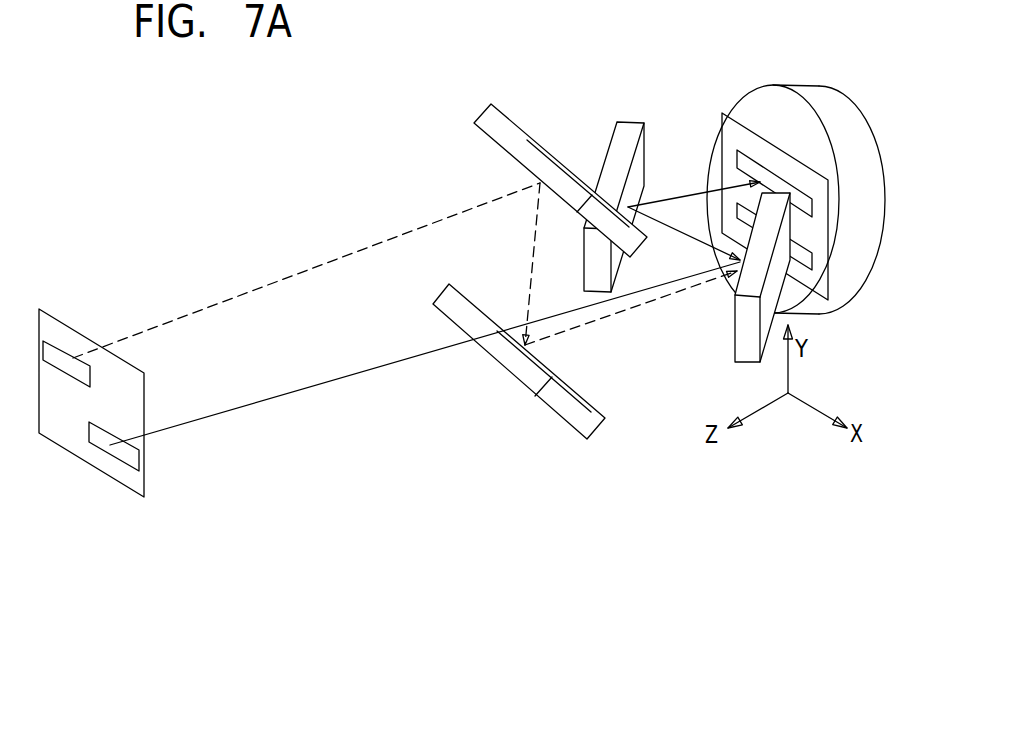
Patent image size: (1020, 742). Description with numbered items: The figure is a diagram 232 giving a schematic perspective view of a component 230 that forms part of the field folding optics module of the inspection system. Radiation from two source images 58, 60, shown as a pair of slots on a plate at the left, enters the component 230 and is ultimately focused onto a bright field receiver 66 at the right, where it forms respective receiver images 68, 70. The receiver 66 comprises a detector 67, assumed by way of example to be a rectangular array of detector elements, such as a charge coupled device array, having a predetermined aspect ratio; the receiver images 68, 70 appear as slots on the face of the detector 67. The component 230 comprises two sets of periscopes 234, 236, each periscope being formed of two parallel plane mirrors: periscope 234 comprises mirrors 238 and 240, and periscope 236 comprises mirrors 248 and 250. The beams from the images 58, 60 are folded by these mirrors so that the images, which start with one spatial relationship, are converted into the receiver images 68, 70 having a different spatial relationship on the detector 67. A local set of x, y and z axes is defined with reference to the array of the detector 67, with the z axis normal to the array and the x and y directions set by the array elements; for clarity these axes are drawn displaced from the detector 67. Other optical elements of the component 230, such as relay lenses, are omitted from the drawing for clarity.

The image 58 is at (107, 445).
The image 60 is at (53, 342).
The bright field receiver 66 is at (885, 233).
The detector 67 is at (838, 202).
The receiver image 68 is at (758, 167).
The receiver image 70 is at (800, 256).
The component 230 is at (202, 520).
The diagram 232 is at (182, 153).
The periscope 234 is at (390, 143).
The periscope 236 is at (657, 103).
The mirror 238 is at (493, 146).
The mirror 240 is at (548, 408).
The mirror 248 is at (747, 318).
The mirror 250 is at (613, 132).